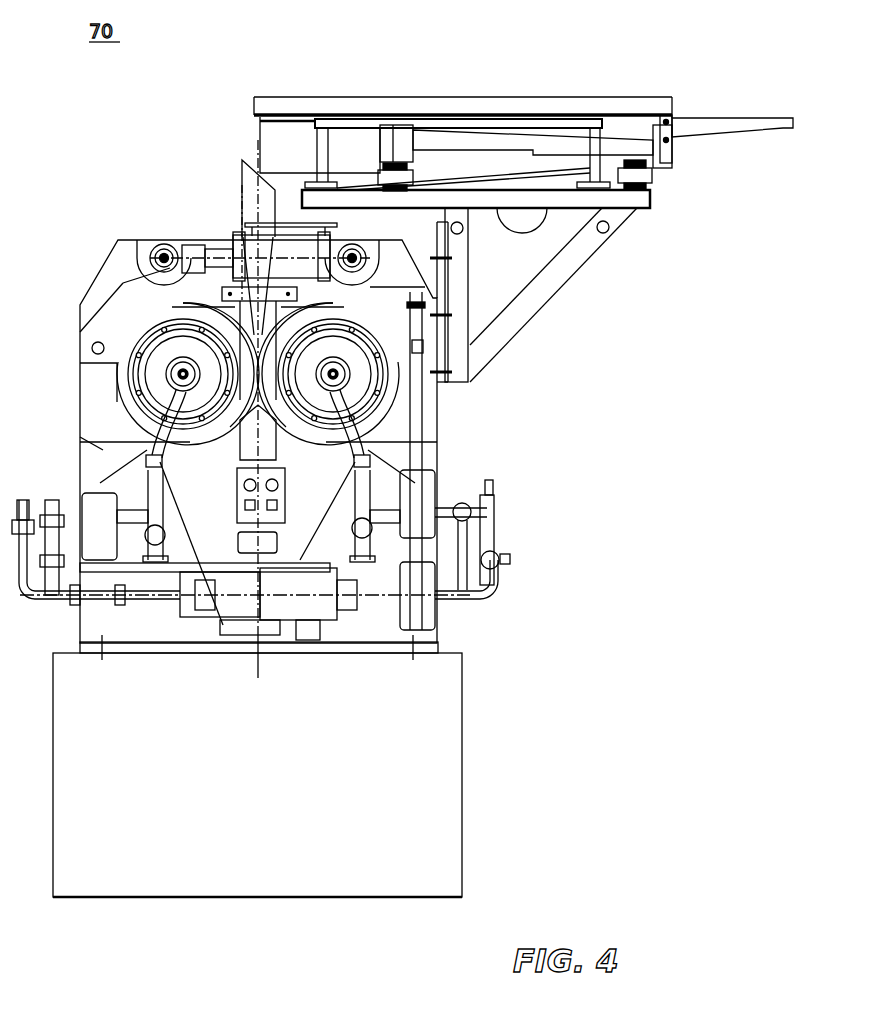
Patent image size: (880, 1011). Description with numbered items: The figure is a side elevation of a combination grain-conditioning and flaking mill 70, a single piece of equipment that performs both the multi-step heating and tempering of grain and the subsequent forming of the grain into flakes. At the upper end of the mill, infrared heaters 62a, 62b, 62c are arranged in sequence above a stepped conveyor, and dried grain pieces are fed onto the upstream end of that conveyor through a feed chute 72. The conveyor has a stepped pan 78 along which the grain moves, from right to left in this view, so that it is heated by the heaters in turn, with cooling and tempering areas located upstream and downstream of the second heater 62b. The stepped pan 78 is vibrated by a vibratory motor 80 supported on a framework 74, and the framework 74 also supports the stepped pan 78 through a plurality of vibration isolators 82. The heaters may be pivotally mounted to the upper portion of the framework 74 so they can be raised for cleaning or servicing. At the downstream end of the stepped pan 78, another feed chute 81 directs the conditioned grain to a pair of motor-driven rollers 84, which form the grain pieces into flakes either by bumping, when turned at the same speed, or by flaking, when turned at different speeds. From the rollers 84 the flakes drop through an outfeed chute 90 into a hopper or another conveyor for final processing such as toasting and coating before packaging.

The combination grain-conditioning and flaking mill 70 is at (261, 518).
The infrared heater 62a is at (605, 80).
The infrared heater 62b is at (485, 80).
The infrared heater 62c is at (339, 80).
The stepped pan 78 is at (500, 150).
The feed chute 72 is at (722, 118).
The vibration isolators 82 is at (390, 174).
The feed chute 81 is at (240, 178).
The vibratory motor 80 is at (517, 232).
The framework 74 is at (547, 300).
The motor-driven rollers 84 is at (122, 330).
The outfeed chute 90 is at (227, 627).